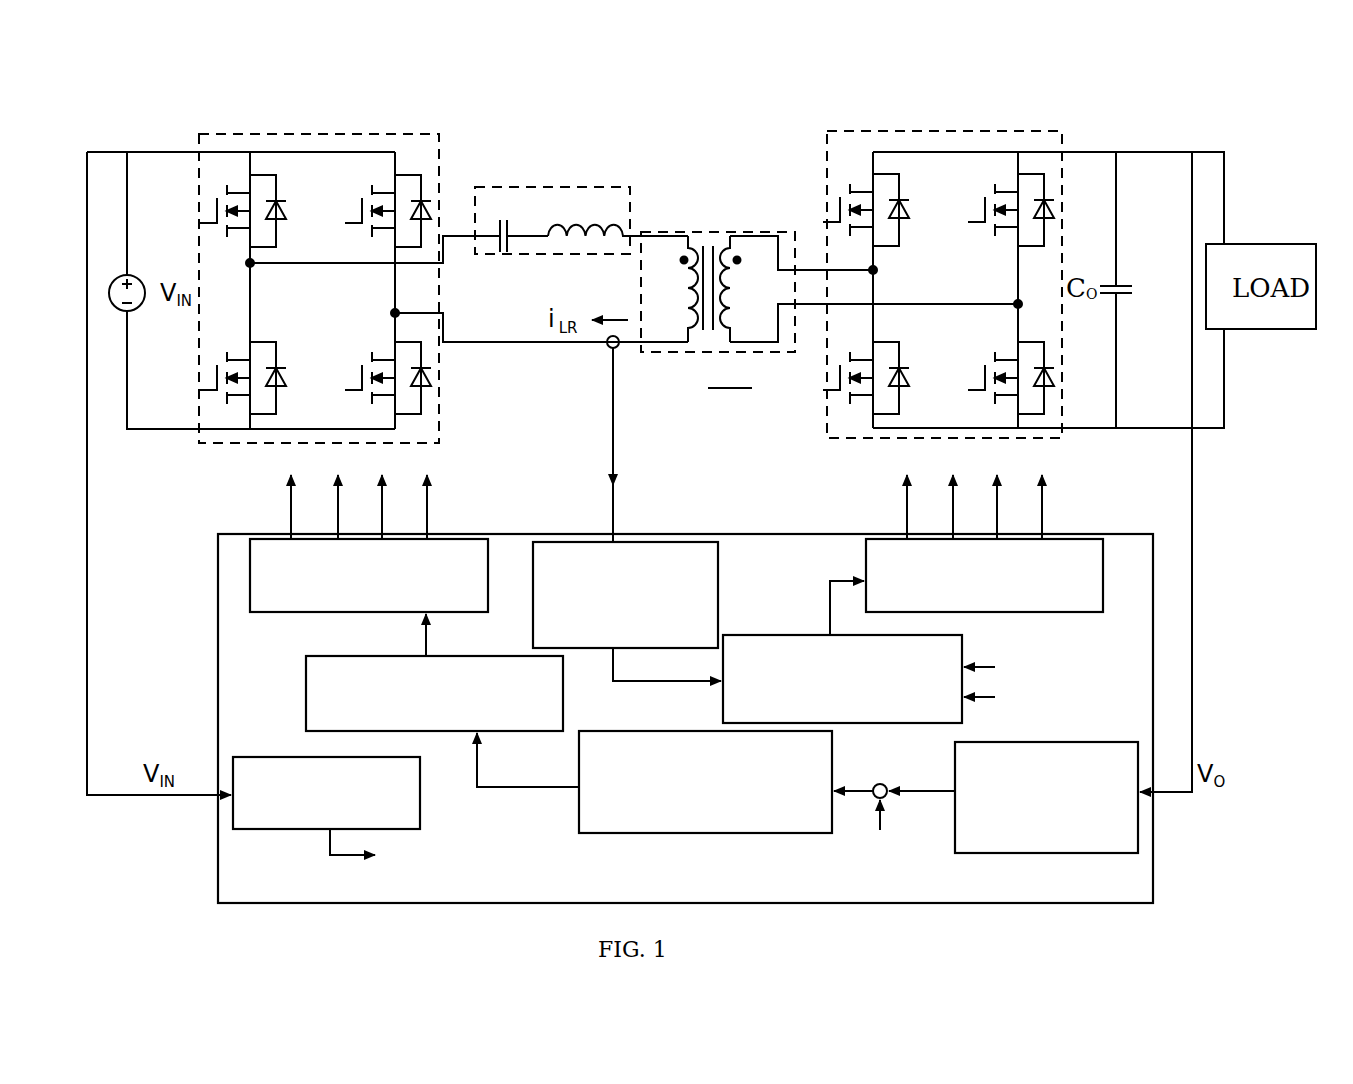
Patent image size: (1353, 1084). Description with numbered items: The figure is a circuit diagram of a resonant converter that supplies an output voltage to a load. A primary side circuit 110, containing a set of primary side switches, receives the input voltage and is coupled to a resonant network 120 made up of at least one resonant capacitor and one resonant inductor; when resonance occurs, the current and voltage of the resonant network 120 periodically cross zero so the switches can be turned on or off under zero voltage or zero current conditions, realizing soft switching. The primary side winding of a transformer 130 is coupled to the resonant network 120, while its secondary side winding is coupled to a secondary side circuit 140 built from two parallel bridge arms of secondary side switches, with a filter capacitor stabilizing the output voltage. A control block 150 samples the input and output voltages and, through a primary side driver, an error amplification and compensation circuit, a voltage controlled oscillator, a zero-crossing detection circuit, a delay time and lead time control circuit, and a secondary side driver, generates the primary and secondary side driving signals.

The primary side circuit 110 is at (270, 134).
The resonant network 120 is at (553, 186).
The transformer 130 is at (665, 232).
The secondary side circuit 140 is at (944, 130).
The control block 150 is at (683, 897).